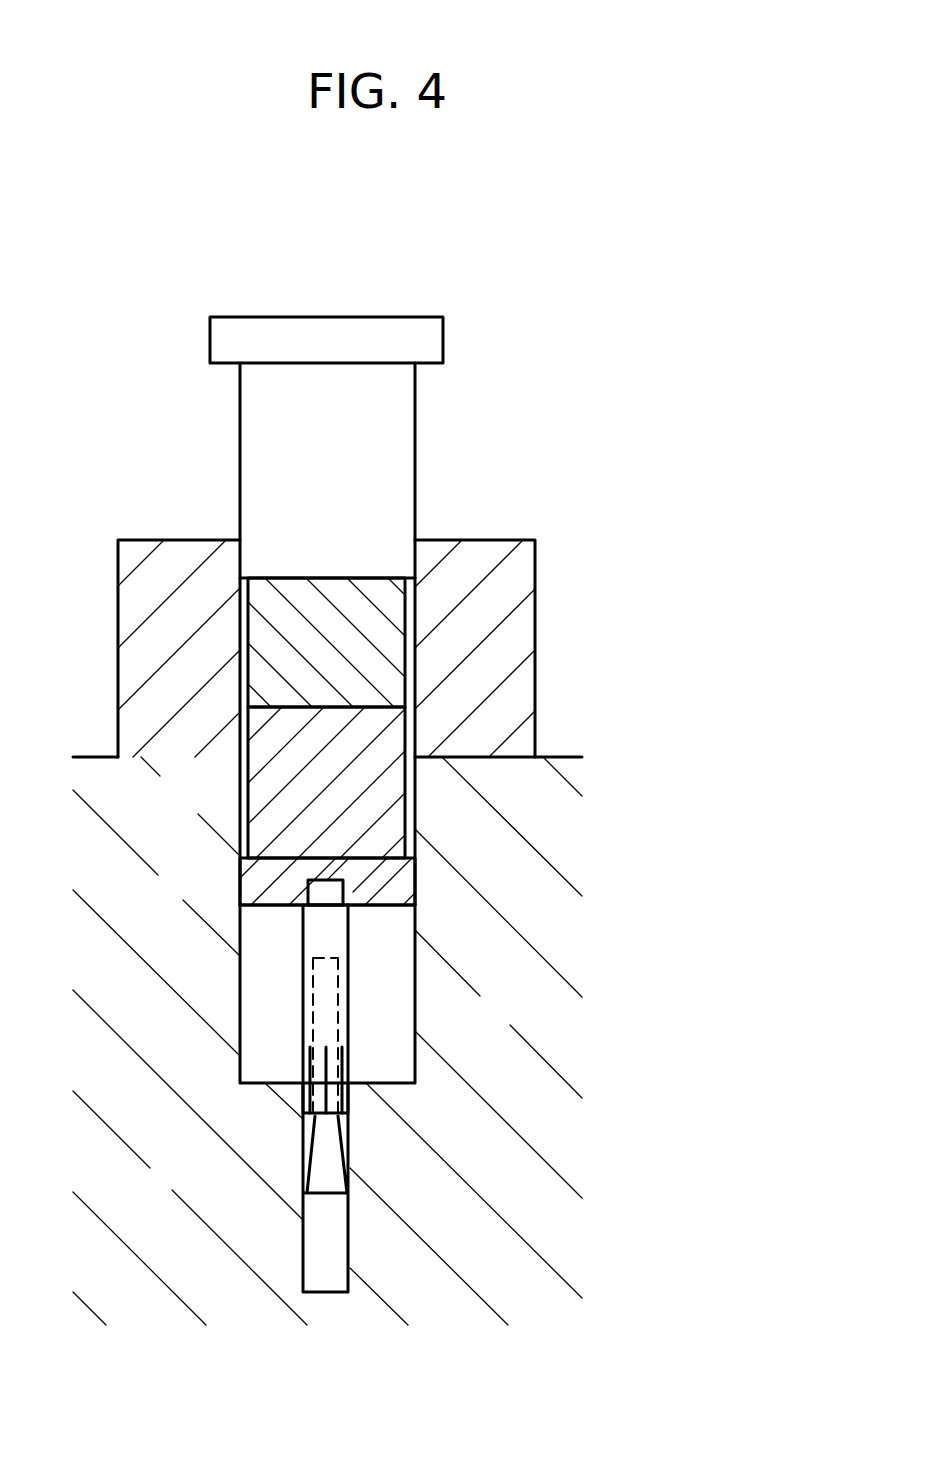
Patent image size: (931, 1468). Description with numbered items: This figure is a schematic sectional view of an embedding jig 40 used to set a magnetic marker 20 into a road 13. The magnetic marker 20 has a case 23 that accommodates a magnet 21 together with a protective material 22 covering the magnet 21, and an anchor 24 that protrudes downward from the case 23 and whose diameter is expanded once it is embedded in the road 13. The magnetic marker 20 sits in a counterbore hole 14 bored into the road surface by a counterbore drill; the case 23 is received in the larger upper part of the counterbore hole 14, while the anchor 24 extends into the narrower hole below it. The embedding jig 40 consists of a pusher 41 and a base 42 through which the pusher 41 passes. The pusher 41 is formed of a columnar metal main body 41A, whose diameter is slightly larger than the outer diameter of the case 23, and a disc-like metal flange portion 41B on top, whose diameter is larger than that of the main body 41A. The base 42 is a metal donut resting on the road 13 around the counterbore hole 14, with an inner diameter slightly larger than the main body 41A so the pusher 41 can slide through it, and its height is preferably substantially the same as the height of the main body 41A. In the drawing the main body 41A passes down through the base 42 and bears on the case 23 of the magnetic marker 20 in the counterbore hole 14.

The road 13 is at (200, 1182).
The counterbore hole 14 is at (410, 965).
The magnetic marker 20 is at (452, 879).
The magnet 21 is at (265, 795).
The protective material 22 is at (282, 652).
The case 23 is at (257, 880).
The anchor 24 is at (403, 1160).
The embedding jig 40 is at (442, 260).
The pusher 41 is at (562, 307).
The main body 41A is at (395, 437).
The flange portion 41B is at (423, 337).
The base 42 is at (508, 595).